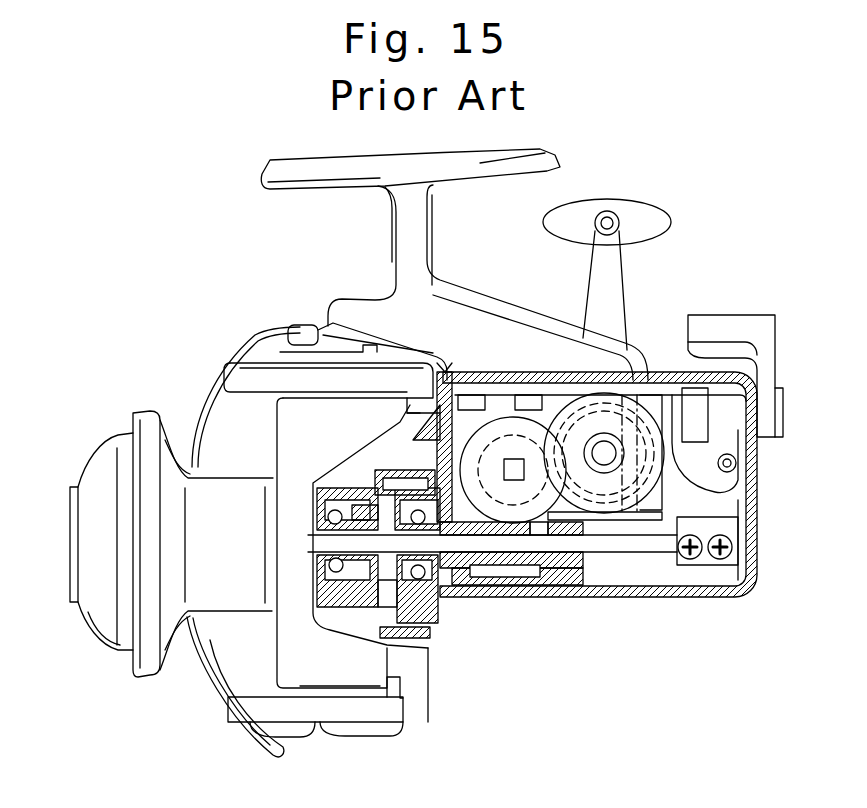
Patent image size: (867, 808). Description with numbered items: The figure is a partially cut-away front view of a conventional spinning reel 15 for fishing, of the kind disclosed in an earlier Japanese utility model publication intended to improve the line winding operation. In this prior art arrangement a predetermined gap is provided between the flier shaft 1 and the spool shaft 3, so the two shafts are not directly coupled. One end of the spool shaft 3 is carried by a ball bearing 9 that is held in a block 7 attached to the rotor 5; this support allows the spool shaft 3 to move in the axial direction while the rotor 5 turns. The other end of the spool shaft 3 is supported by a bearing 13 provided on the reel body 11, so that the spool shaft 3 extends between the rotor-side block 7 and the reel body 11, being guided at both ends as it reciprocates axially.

The flier shaft 1 is at (470, 563).
The spool shaft 3 is at (642, 548).
The rotor 5 is at (283, 425).
The block 7 is at (346, 600).
The ball bearing 9 is at (320, 507).
The reel body 11 is at (440, 363).
The bearing 13 is at (556, 590).
The spinning reel 15 is at (698, 224).